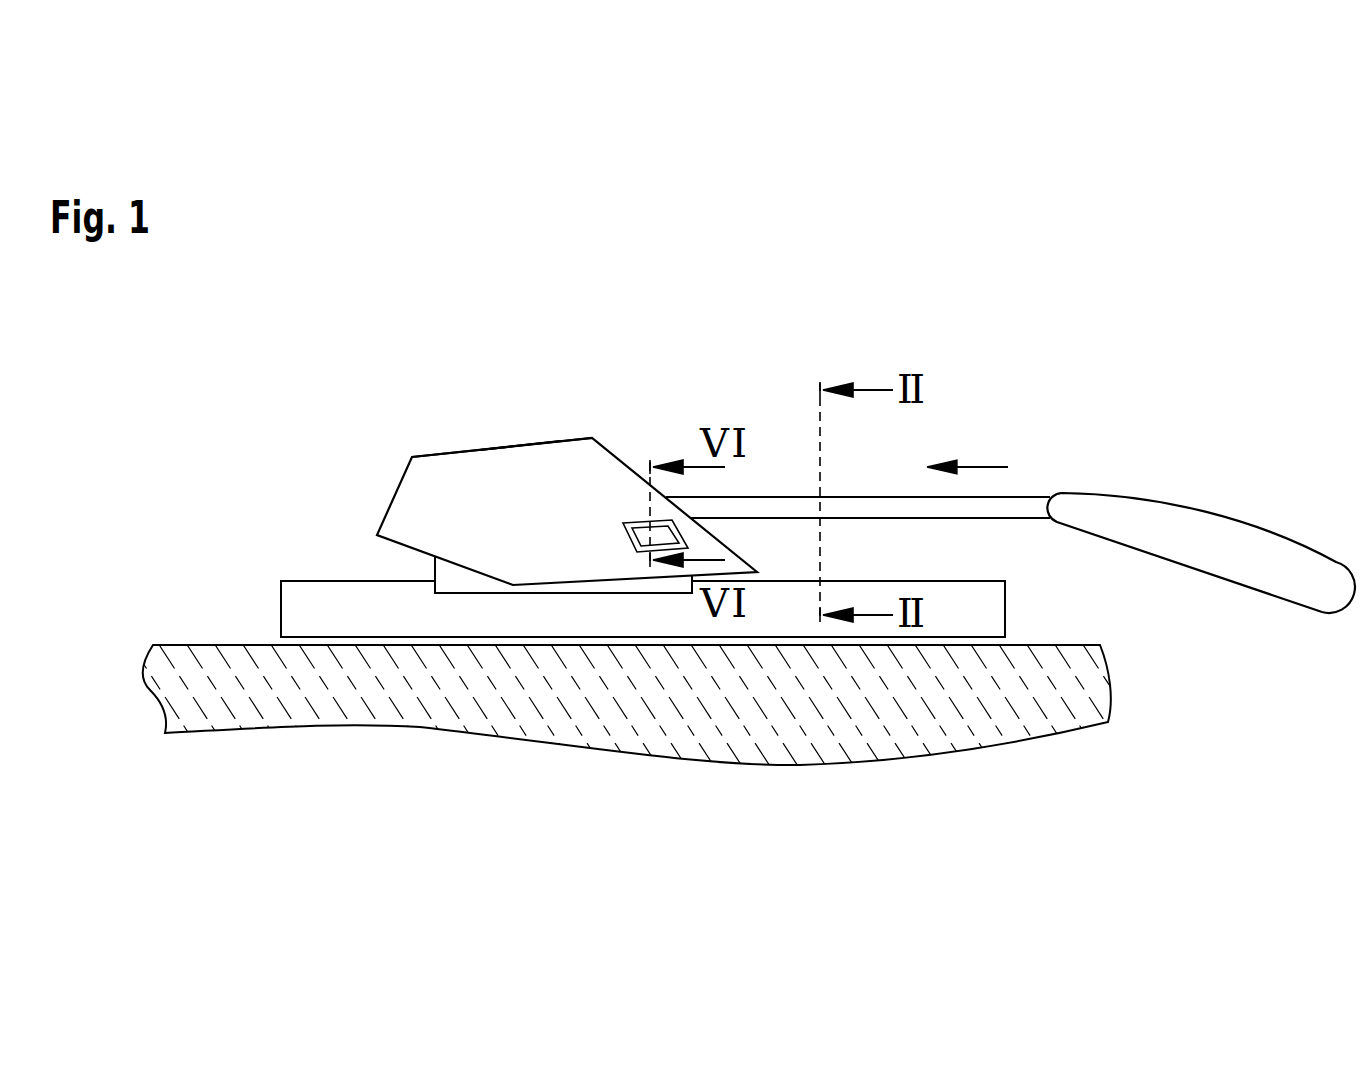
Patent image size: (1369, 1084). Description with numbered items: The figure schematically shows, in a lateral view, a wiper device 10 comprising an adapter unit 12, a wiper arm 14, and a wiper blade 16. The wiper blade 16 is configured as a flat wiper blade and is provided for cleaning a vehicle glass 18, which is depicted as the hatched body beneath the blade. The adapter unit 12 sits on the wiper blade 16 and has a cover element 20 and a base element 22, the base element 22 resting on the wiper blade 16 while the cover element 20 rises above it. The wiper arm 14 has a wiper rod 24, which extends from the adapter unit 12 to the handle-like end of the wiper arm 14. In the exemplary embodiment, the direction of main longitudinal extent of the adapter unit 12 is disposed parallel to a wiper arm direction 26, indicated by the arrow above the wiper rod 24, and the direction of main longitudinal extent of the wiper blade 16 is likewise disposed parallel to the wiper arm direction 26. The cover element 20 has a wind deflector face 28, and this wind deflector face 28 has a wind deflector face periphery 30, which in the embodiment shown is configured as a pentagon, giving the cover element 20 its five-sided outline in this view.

The wiper device 10 is at (1140, 295).
The adapter unit 12 is at (640, 390).
The wiper arm 14 is at (1096, 462).
The wiper blade 16 is at (303, 598).
The vehicle glass 18 is at (385, 702).
The cover element 20 is at (572, 463).
The base element 22 is at (452, 570).
The wiper rod 24 is at (1028, 512).
The wiper arm direction 26 is at (968, 465).
The wind deflector face 28 is at (470, 464).
The wind deflector face periphery 30 is at (505, 445).